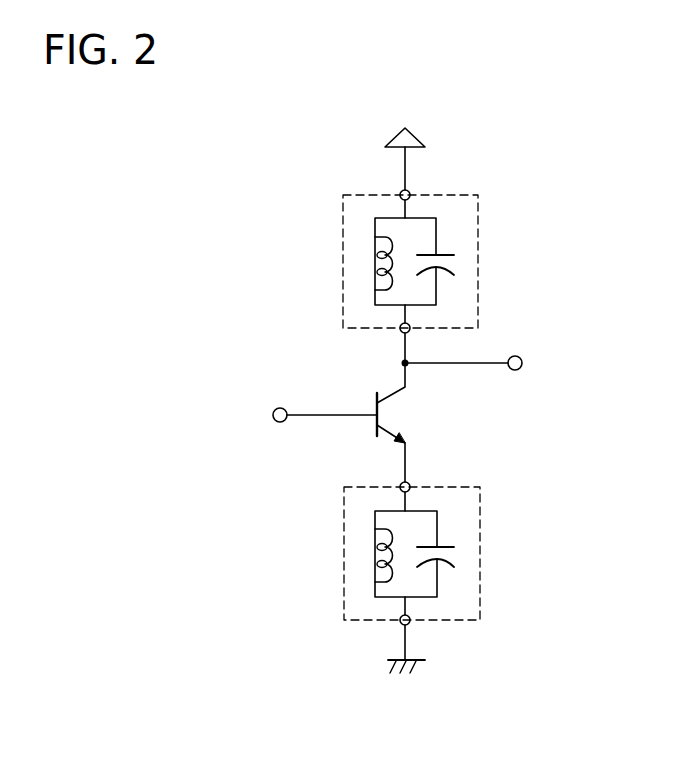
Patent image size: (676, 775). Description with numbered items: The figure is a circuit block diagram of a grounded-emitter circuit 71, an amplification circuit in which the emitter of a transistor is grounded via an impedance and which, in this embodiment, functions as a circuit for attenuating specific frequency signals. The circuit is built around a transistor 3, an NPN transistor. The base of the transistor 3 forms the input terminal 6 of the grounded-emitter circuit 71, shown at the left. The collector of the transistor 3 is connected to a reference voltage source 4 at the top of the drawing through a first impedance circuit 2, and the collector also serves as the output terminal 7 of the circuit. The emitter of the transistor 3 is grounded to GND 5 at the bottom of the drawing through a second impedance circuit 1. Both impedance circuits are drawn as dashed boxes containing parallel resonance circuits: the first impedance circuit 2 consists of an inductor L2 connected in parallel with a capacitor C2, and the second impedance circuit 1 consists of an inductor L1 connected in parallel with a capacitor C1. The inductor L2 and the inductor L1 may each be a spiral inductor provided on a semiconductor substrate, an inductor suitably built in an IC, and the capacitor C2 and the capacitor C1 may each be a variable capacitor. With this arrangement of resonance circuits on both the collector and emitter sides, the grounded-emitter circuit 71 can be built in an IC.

The grounded-emitter circuit 71 is at (535, 108).
The reference voltage source 4 is at (423, 142).
The first impedance circuit 2 is at (440, 261).
The second impedance circuit 1 is at (442, 553).
The transistor 3 is at (382, 417).
The GND 5 is at (418, 658).
The input terminal 6 is at (278, 407).
The output terminal 7 is at (523, 363).
The inductor L1 is at (370, 555).
The capacitor C1 is at (446, 543).
The inductor L2 is at (370, 263).
The capacitor C2 is at (446, 252).